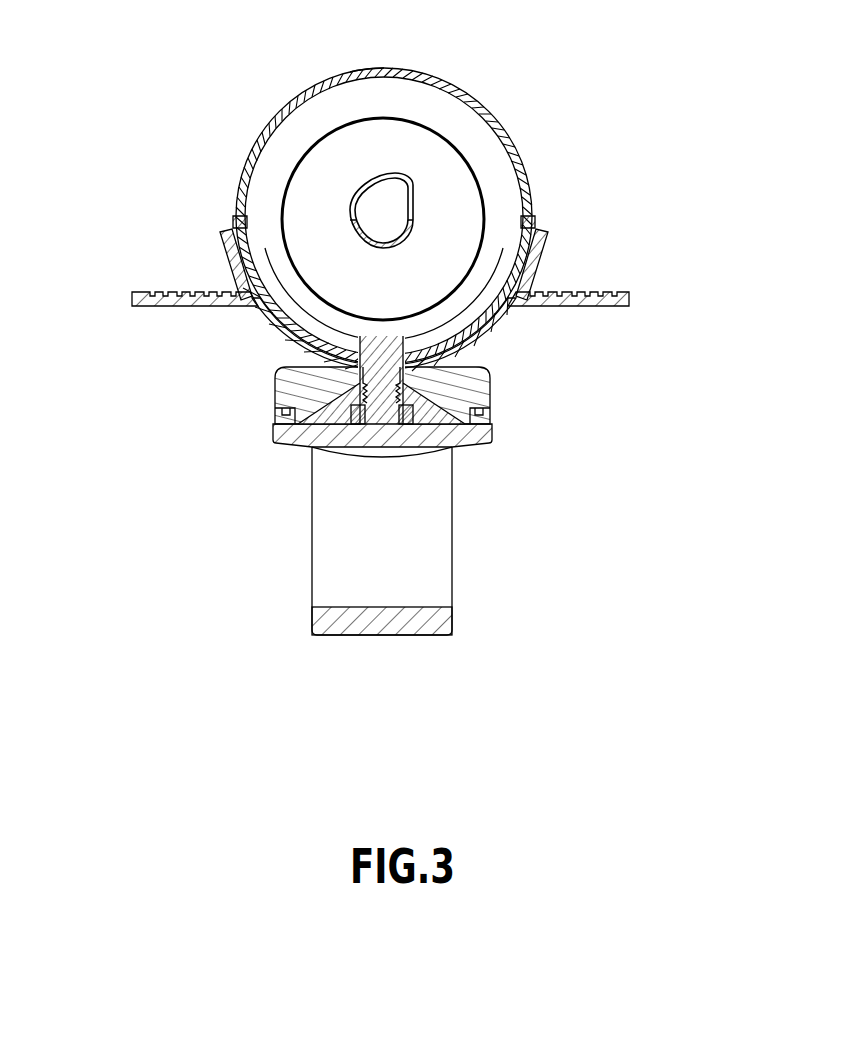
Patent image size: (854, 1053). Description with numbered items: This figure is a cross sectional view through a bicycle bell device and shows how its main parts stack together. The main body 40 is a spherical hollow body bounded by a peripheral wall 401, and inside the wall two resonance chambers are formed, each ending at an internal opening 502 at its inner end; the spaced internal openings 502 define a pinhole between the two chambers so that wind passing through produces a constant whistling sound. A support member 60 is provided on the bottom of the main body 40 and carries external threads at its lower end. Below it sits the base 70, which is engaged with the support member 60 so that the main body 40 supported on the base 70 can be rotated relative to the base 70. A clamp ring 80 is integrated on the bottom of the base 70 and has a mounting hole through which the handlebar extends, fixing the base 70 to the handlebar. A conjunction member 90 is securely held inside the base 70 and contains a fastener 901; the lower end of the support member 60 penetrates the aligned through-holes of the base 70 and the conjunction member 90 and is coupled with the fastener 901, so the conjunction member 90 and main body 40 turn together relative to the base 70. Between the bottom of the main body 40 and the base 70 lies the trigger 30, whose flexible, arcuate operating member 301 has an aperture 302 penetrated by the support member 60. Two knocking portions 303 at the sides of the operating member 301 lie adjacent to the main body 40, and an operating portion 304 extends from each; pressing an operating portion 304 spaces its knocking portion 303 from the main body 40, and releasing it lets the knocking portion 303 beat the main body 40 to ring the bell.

The trigger 30 is at (603, 308).
The operating member 301 is at (490, 330).
The aperture 302 is at (358, 363).
The knocking portion 303 is at (222, 245).
The operating portion 304 is at (150, 292).
The main body 40 is at (462, 95).
The peripheral wall 401 is at (357, 70).
The internal opening 502 is at (410, 190).
The support member 60 is at (470, 400).
The base 70 is at (280, 383).
The clamp ring 80 is at (400, 640).
The conjunction member 90 is at (283, 413).
The fastener 901 is at (473, 445).